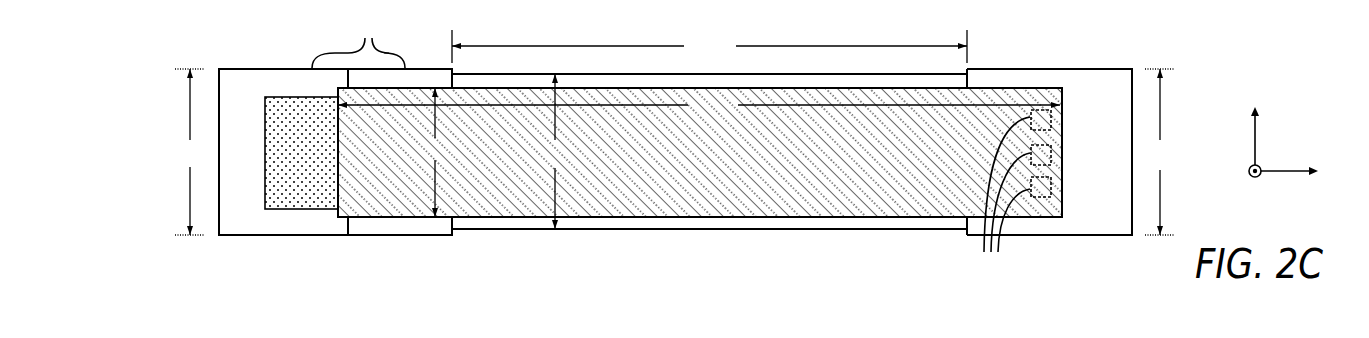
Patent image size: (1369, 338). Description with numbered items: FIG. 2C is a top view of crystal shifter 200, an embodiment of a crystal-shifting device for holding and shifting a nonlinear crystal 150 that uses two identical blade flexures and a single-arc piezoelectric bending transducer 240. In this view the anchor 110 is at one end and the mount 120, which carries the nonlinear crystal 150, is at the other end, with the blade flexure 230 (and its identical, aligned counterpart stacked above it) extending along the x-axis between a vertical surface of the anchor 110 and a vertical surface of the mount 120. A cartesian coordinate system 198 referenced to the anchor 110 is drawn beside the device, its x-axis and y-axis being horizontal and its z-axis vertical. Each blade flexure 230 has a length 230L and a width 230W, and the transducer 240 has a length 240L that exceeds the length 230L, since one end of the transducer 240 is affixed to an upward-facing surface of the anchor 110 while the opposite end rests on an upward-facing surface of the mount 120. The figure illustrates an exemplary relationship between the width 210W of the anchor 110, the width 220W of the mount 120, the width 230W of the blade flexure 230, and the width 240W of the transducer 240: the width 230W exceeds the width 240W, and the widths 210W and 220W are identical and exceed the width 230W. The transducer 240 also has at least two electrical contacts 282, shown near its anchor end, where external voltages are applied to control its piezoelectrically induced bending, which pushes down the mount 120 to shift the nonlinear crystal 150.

The crystal shifter 200 is at (667, 139).
The mount 120 is at (358, 42).
The nonlinear crystal 150 is at (322, 164).
The transducer 240 is at (695, 164).
The blade flexure 230 is at (709, 174).
The anchor 110 is at (1080, 164).
The electrical contacts 282 is at (1003, 198).
The cartesian coordinate system 198 is at (1238, 119).
The width of mount 220W is at (192, 152).
The width of anchor 210W is at (1161, 152).
The length of blade flexure 230L is at (709, 46).
The length of transducer 240L is at (699, 106).
The width of transducer 240W is at (435, 152).
The width of blade flexure 230W is at (555, 151).